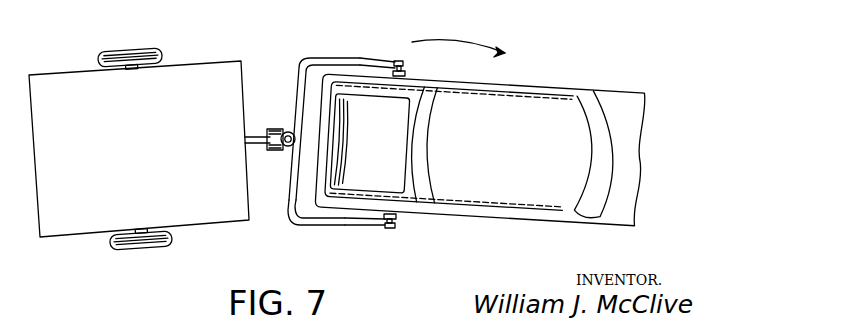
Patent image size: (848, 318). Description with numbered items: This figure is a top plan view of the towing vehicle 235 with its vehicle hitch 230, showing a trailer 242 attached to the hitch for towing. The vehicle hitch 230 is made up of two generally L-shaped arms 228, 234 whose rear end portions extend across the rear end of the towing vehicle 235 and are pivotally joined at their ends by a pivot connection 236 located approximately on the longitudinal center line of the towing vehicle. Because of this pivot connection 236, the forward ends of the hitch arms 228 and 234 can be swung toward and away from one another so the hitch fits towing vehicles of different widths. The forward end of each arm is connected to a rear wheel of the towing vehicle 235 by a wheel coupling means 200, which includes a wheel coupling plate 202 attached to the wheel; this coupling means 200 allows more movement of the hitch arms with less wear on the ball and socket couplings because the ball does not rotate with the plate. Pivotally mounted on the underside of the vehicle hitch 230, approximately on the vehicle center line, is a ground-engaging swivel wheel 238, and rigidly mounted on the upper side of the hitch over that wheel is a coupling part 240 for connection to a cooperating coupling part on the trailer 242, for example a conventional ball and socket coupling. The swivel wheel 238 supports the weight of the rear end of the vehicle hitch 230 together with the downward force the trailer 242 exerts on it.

The wheel coupling means 200 is at (413, 71).
The wheel coupling plate 202 is at (433, 76).
The hitch arm 228 is at (323, 224).
The vehicle hitch 230 is at (294, 218).
The hitch arm 234 is at (314, 58).
The towing vehicle 235 is at (543, 86).
The pivot connection 236 is at (283, 156).
The ground-engaging swivel wheel 238 is at (272, 128).
The coupling part 240 is at (292, 138).
The trailer 242 is at (57, 73).